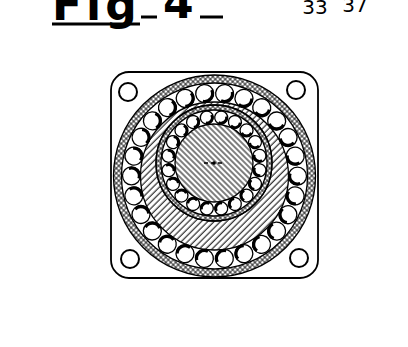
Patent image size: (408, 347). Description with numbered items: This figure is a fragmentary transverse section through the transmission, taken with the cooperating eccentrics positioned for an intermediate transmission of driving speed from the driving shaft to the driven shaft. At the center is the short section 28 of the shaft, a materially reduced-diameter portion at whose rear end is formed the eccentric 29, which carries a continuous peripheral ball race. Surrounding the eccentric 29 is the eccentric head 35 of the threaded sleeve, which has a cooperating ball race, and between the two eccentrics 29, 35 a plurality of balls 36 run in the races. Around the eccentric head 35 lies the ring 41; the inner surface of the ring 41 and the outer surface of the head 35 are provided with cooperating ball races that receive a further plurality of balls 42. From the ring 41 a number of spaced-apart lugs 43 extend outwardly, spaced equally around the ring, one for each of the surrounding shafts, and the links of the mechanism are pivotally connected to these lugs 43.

The short section 28 is at (126, 152).
The eccentric 29 is at (150, 192).
The eccentric head 35 is at (290, 192).
The balls 36 is at (188, 270).
The ring 41 is at (228, 82).
The balls 42 is at (252, 97).
The lugs 43 is at (147, 78).